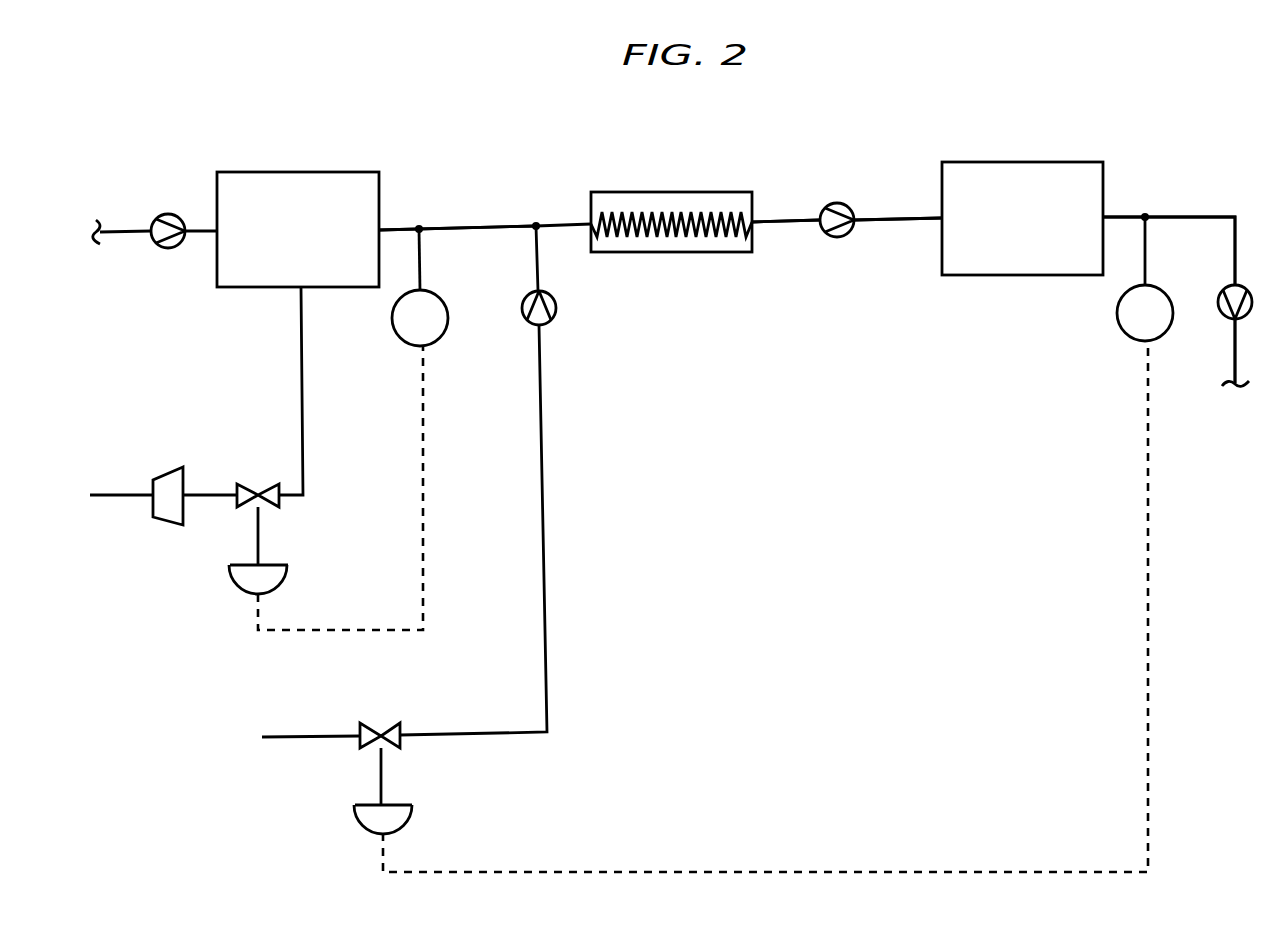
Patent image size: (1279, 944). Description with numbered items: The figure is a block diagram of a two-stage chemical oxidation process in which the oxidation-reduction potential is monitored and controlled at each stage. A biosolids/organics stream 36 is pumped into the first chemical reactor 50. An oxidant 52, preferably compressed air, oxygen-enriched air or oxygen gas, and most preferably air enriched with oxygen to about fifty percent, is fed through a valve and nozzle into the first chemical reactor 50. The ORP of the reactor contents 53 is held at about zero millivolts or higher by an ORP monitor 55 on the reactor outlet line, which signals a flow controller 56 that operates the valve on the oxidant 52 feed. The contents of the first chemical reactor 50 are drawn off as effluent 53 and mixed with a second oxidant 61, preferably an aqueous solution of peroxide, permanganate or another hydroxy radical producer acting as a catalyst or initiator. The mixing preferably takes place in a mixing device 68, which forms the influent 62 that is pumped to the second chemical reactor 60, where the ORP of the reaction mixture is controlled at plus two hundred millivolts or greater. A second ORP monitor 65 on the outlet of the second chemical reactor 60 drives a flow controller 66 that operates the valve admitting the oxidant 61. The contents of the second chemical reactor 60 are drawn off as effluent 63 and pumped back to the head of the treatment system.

The biosolids/organics stream 36 is at (124, 229).
The first chemical reactor 50 is at (297, 172).
The oxidant 52 is at (302, 373).
The effluent 53 is at (455, 225).
The ORP monitor 55 is at (433, 293).
The flow controller 56 is at (238, 588).
The second chemical reactor 60 is at (1018, 160).
The oxidant 61 is at (543, 400).
The influent 62 is at (770, 218).
The effluent 63 is at (1195, 215).
The ORP monitor 65 is at (1163, 288).
The flow controller 66 is at (360, 827).
The mixing device 68 is at (667, 190).